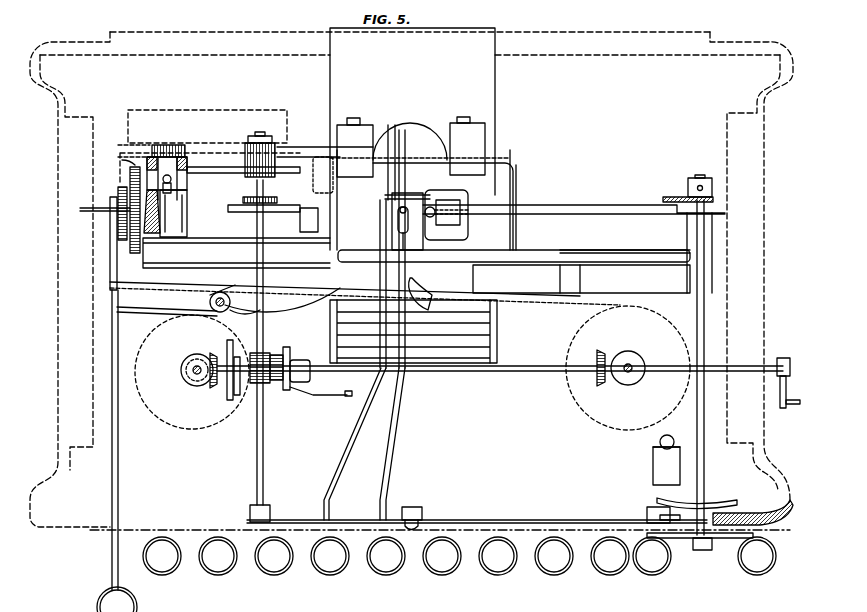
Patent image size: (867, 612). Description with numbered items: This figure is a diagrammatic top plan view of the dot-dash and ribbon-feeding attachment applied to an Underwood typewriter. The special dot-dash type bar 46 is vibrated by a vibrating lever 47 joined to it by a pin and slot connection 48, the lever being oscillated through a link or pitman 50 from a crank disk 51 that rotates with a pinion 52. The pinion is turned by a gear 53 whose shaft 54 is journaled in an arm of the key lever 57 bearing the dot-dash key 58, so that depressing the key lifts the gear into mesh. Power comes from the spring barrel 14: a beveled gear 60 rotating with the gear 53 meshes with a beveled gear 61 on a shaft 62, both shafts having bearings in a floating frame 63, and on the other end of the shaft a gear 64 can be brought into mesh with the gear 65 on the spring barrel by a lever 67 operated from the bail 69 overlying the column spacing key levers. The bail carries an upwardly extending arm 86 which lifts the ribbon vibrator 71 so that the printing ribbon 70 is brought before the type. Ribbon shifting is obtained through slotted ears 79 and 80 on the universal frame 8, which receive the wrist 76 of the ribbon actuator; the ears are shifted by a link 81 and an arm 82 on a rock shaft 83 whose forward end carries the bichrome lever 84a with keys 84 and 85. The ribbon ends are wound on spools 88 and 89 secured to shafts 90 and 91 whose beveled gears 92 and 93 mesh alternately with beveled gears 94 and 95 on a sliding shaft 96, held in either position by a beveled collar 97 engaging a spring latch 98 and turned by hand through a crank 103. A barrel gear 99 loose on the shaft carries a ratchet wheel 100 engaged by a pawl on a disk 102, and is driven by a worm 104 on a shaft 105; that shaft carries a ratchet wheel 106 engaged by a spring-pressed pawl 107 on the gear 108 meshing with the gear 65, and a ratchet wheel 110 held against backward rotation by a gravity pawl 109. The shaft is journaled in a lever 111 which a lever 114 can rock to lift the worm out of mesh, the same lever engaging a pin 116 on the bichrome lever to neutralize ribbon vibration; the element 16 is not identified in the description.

The spring barrel 14 is at (128, 112).
The gear 65 is at (120, 147).
The gear 64 is at (175, 146).
The spring-pressed pawl 107 is at (248, 140).
The gear 108 is at (258, 143).
The lug or arm 86 is at (430, 165).
The bail 69 is at (400, 160).
The arm 82 is at (665, 197).
The link 81 is at (580, 205).
The gear 53 is at (122, 160).
The pinion 52 is at (130, 172).
The crank disk 51 is at (118, 192).
The shaft 54 is at (105, 209).
The link or pitman 50 is at (108, 232).
The lever 67 is at (213, 168).
The ratchet wheel 106 is at (268, 197).
The shaft 62 is at (172, 186).
The beveled gear 60 is at (158, 210).
The floating frame 63 is at (180, 212).
The ratchet wheel 110 is at (240, 209).
The gravity pawl 109 is at (305, 215).
The ear 79 is at (392, 200).
The wrist 76 is at (398, 222).
The ear 80 is at (424, 220).
The universal frame 8 is at (470, 235).
The shaft 105 is at (256, 235).
The beveled gear 61 is at (195, 243).
The pin and slot connection 48 is at (217, 293).
The vibrating lever 47 is at (135, 312).
The dot-dash type bar 46 is at (350, 298).
The vibrator 71 is at (410, 296).
The printing ribbon 70 is at (575, 298).
The beveled gear 94 is at (210, 355).
The ratchet wheel 100 is at (256, 353).
The barrel gear 99 is at (276, 355).
The beveled collar 97 is at (289, 350).
The beveled gear 95 is at (601, 350).
The shaft 90 is at (184, 376).
The beveled gear 92 is at (197, 386).
The disk 102 is at (230, 392).
The worm 104 is at (300, 393).
The spring latch 98 is at (320, 398).
The shaft 96 is at (530, 372).
The beveled gear 93 is at (622, 384).
The shaft 91 is at (632, 372).
The spool 88 is at (213, 425).
The spool 89 is at (604, 430).
The key lever 57 is at (118, 482).
The lever 114 is at (653, 475).
The rock shaft 83 is at (705, 478).
The lever 111 is at (530, 520).
The pin 116 is at (657, 500).
The rollers 16 is at (535, 566).
The key 84 is at (652, 566).
The lever 84a is at (718, 540).
The key 85 is at (756, 566).
The dot-dash key 58 is at (100, 592).
The crank 103 is at (784, 408).